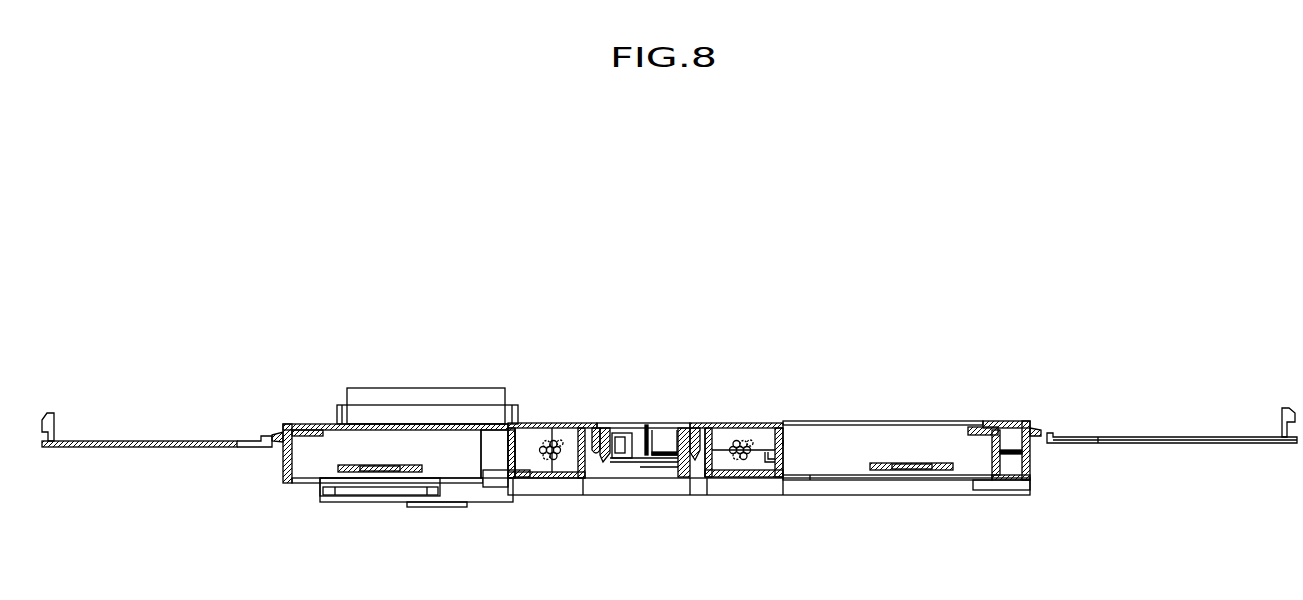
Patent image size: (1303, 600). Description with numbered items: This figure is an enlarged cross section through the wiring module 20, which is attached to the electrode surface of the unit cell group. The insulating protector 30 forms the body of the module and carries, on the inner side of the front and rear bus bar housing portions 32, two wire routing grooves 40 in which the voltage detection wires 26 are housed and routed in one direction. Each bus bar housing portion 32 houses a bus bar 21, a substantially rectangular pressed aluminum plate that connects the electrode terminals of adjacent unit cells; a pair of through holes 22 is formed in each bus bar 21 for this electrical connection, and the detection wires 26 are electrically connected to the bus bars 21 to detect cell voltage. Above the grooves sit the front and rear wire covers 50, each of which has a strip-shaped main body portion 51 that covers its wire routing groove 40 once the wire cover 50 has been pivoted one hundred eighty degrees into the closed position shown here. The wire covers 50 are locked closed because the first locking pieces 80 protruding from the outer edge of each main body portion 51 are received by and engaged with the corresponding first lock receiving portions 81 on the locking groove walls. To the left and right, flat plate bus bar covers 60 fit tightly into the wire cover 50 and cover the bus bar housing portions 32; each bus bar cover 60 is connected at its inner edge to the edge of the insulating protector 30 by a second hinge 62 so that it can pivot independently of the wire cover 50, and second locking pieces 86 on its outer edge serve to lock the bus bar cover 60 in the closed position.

The wiring module 20 is at (713, 346).
The bus bar 21 is at (357, 472).
The through hole 22 is at (381, 472).
The voltage detection wire 26 is at (545, 457).
The insulating protector 30 is at (652, 497).
The bus bar housing portion 32 is at (517, 442).
The wire routing groove 40 is at (513, 443).
The wire cover 50 is at (455, 351).
The main body portion 51 is at (557, 423).
The bus bar cover 60 is at (143, 441).
The second hinge 62 is at (278, 437).
The first locking piece 80 is at (596, 458).
The first lock receiving portion 81 is at (601, 430).
The second locking piece 86 is at (44, 416).